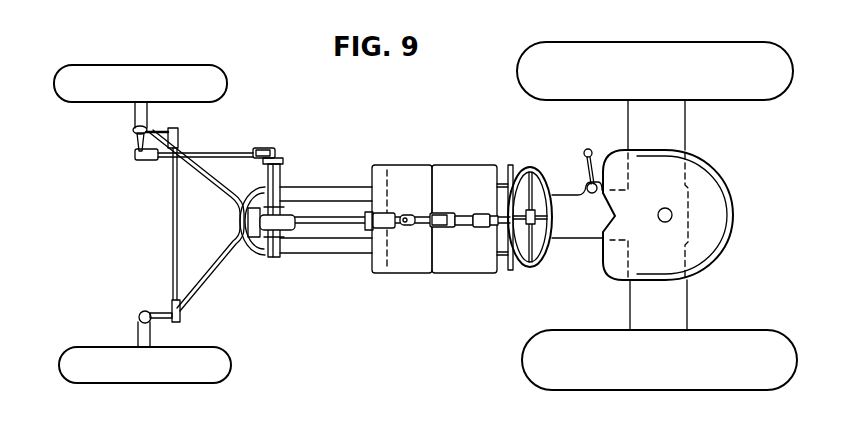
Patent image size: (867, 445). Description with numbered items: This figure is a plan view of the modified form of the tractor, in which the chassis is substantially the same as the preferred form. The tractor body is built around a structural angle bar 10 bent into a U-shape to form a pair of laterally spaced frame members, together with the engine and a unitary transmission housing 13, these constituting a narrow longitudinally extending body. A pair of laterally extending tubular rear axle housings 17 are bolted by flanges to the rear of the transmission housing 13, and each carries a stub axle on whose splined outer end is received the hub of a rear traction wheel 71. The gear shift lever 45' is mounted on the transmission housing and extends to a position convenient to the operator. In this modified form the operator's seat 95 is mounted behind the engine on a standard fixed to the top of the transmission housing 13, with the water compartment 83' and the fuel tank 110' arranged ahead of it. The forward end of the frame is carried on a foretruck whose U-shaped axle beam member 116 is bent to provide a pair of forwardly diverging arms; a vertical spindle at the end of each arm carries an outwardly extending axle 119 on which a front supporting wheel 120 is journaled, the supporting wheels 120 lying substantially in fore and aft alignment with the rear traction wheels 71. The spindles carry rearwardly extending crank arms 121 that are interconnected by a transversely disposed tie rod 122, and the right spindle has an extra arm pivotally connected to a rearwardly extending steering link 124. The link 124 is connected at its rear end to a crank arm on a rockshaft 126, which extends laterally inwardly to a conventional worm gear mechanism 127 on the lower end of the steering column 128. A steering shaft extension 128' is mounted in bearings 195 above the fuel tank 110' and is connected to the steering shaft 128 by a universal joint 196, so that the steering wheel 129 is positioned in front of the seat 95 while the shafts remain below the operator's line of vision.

The structural angle bar 10 is at (305, 188).
The transmission housing 13 is at (575, 231).
The rear axle housing 17 is at (672, 120).
The gear shift lever 45' is at (580, 160).
The rear traction wheel 71 is at (568, 54).
The water compartment 83' is at (402, 202).
The operator's seat 95 is at (717, 185).
The fuel tank 110' is at (464, 207).
The U-shaped axle beam member 116 is at (205, 270).
The axle 119 is at (139, 320).
The supporting wheel 120 is at (105, 77).
The crank arm 121 is at (156, 131).
The tie rod 122 is at (172, 240).
The steering link 124 is at (221, 152).
The rockshaft 126 is at (268, 182).
The worm gear mechanism 127 is at (276, 238).
The steering column 128 is at (311, 197).
The steering shaft extension 128' is at (456, 241).
The steering wheel 129 is at (543, 177).
The bearings 195 is at (440, 218).
The universal joint 196 is at (406, 228).